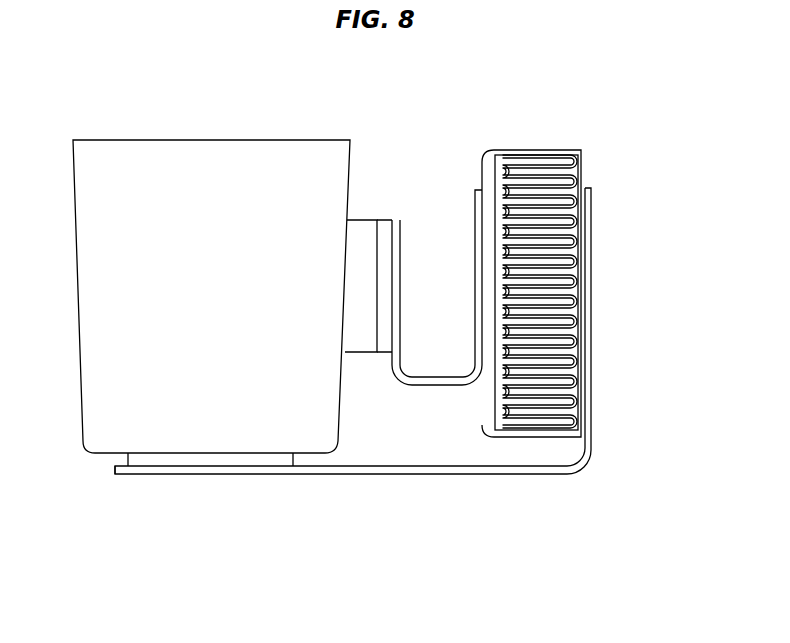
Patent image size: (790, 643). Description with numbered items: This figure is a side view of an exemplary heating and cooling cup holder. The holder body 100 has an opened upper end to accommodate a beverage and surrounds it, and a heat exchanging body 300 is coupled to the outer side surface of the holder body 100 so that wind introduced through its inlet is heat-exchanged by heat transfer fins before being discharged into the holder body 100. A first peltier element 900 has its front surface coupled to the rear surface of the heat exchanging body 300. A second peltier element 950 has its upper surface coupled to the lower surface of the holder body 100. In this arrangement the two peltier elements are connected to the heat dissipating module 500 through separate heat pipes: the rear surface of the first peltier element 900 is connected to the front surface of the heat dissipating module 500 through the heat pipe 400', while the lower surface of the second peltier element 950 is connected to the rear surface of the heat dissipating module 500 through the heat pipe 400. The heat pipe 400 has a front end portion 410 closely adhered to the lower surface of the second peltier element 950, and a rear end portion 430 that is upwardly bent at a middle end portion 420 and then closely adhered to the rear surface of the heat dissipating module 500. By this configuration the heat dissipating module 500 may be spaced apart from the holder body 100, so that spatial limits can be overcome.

The holder body 100 is at (198, 160).
The heat exchanging body 300 is at (352, 268).
The first peltier element 900 is at (385, 228).
The heat pipe 400' is at (437, 273).
The heat dissipating module 500 is at (541, 190).
The rear end portion 430 is at (588, 224).
The middle end portion 420 is at (591, 462).
The heat pipe 400 is at (341, 517).
The front end portion 410 is at (145, 477).
The second peltier element 950 is at (208, 460).